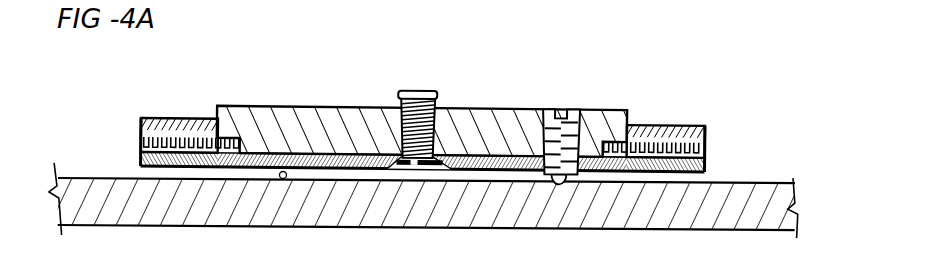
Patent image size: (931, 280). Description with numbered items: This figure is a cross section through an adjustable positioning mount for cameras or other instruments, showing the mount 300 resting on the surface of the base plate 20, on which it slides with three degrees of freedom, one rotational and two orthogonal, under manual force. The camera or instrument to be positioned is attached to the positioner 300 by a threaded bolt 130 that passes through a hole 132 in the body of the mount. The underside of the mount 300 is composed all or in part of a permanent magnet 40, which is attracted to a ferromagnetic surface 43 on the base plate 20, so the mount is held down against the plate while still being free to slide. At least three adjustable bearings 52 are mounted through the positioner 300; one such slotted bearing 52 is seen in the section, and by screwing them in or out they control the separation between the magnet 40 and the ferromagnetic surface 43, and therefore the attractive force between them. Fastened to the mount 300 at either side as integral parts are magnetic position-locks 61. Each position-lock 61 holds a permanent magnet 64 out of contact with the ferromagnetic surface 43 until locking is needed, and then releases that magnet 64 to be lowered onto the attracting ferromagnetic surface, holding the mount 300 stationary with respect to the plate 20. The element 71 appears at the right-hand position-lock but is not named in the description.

The base plate 20 is at (738, 218).
The ferromagnetic surface 43 is at (117, 177).
The permanent magnet 40 is at (310, 105).
The magnetic position-lock 61 is at (192, 117).
The permanent magnet 64 is at (705, 162).
The contact teeth 71 is at (705, 148).
The threaded bolt 130 is at (418, 87).
The hole 132 is at (487, 120).
The adjustable bearing 52 is at (582, 108).
The mount 300 is at (518, 108).